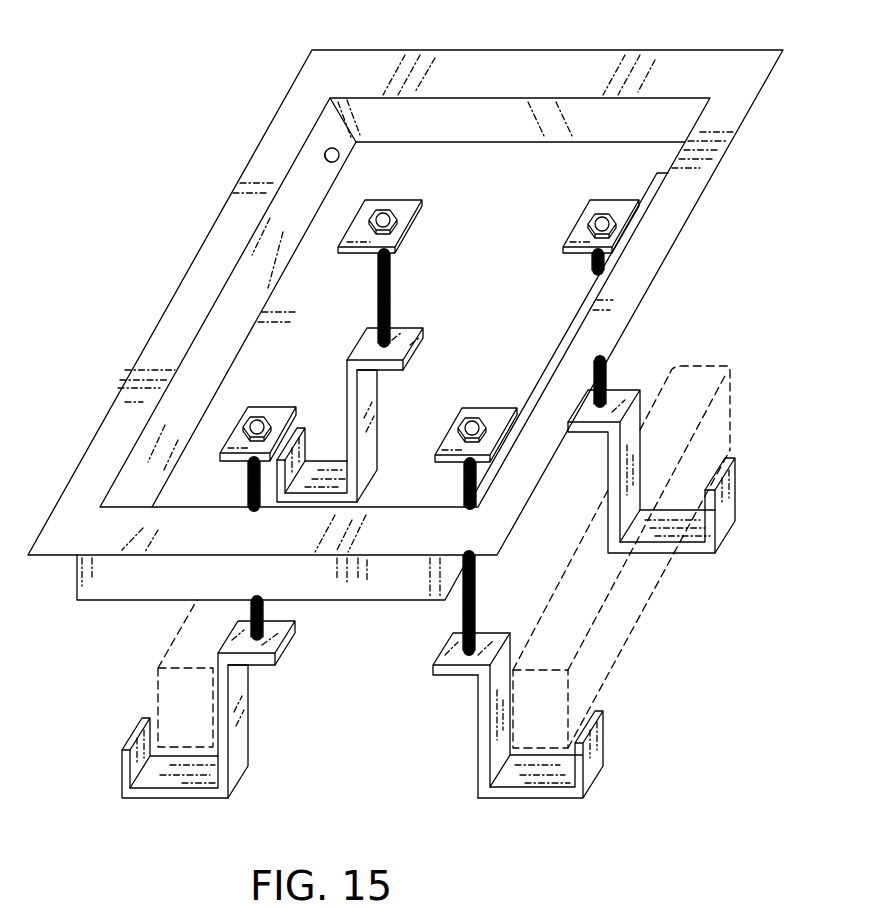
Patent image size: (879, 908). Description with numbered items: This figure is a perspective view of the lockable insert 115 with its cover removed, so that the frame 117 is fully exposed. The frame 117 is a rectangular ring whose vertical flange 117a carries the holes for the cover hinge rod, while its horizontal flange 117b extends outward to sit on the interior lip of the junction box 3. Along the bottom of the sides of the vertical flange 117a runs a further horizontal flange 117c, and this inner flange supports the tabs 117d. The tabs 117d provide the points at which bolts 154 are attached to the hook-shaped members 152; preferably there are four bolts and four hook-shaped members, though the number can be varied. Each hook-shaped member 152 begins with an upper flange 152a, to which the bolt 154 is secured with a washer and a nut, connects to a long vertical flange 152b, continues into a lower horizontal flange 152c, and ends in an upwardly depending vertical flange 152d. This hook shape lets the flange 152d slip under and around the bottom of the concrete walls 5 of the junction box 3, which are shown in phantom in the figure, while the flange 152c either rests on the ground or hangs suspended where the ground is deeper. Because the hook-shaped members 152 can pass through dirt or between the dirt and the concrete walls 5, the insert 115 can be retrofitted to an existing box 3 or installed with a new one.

The lockable insert 115 is at (125, 292).
The frame 117 is at (740, 146).
The vertical flange 117a is at (513, 131).
The horizontal flange 117b is at (720, 68).
The horizontal flange 117c is at (355, 177).
The tabs 117d is at (578, 228).
The threaded bolt 154 is at (392, 268).
The hook-shaped members 152 is at (410, 312).
The upper flange 152a is at (452, 672).
The long vertical flange 152b is at (480, 762).
The lower horizontal flange 152c is at (545, 800).
The upwardly depending vertical flange 152d is at (606, 741).
The junction box 3 is at (668, 575).
The walls 5 is at (605, 632).